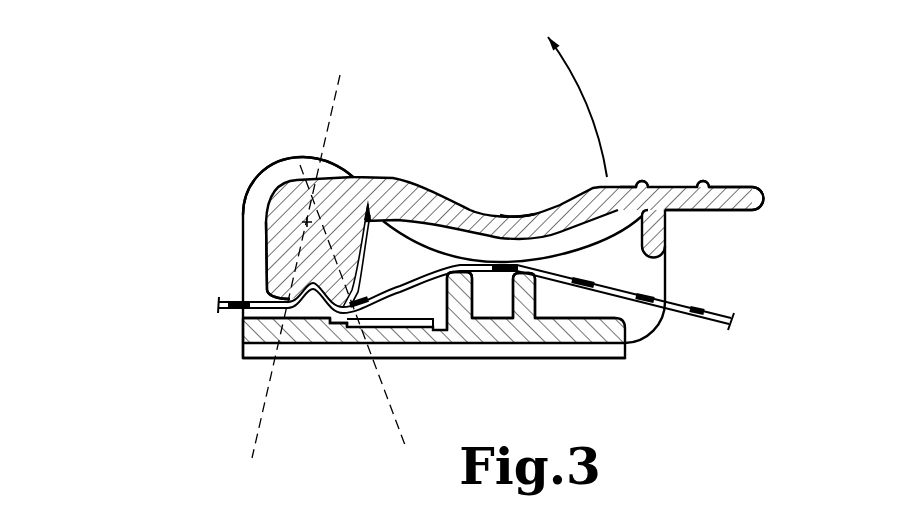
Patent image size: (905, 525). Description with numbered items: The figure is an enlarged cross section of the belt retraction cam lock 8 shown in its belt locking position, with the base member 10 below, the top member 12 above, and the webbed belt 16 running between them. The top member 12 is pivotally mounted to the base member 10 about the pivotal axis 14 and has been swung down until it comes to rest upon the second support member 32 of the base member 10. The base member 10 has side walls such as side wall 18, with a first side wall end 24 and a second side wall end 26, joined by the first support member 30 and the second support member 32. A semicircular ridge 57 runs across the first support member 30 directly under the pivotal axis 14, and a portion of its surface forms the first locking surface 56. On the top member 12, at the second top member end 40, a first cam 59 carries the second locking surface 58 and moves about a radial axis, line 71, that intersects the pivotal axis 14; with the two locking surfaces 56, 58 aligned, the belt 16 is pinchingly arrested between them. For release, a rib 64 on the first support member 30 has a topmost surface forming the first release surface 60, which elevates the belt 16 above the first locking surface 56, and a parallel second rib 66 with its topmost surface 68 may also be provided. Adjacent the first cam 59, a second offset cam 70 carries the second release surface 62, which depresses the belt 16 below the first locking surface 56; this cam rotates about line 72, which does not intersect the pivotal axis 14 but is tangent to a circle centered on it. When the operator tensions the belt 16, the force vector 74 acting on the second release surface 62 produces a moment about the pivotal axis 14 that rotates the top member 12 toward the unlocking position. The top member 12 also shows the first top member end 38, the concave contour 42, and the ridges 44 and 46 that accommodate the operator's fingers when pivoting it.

The belt retraction cam lock 8 is at (586, 74).
The base member 10 is at (496, 371).
The top member 12 is at (451, 177).
The pivotal axis 14 is at (307, 222).
The belt 16 is at (217, 302).
The side wall 18 is at (645, 267).
The first side wall end 24 is at (652, 333).
The second side wall end 26 is at (243, 318).
The first support member 30 is at (590, 343).
The second support member 32 is at (662, 238).
The first top member end 38 is at (764, 198).
The second top member end 40 is at (263, 218).
The concave contour 42 is at (541, 212).
The ridge 44 is at (705, 182).
The ridge 46 is at (646, 182).
The first locking surface 56 is at (295, 322).
The semicircular ridge 57 is at (310, 320).
The second locking surface 58 is at (284, 274).
The first cam 59 is at (282, 272).
The first release surface 60 is at (471, 280).
The second release surface 62 is at (388, 302).
The rib 64 is at (463, 277).
The second rib 66 is at (527, 277).
The topmost surface 68 is at (532, 281).
The second offset cam 70 is at (357, 283).
The radial axis line 71 is at (295, 270).
The rotation line of second offset cam 72 is at (296, 150).
The force vector 74 is at (383, 207).